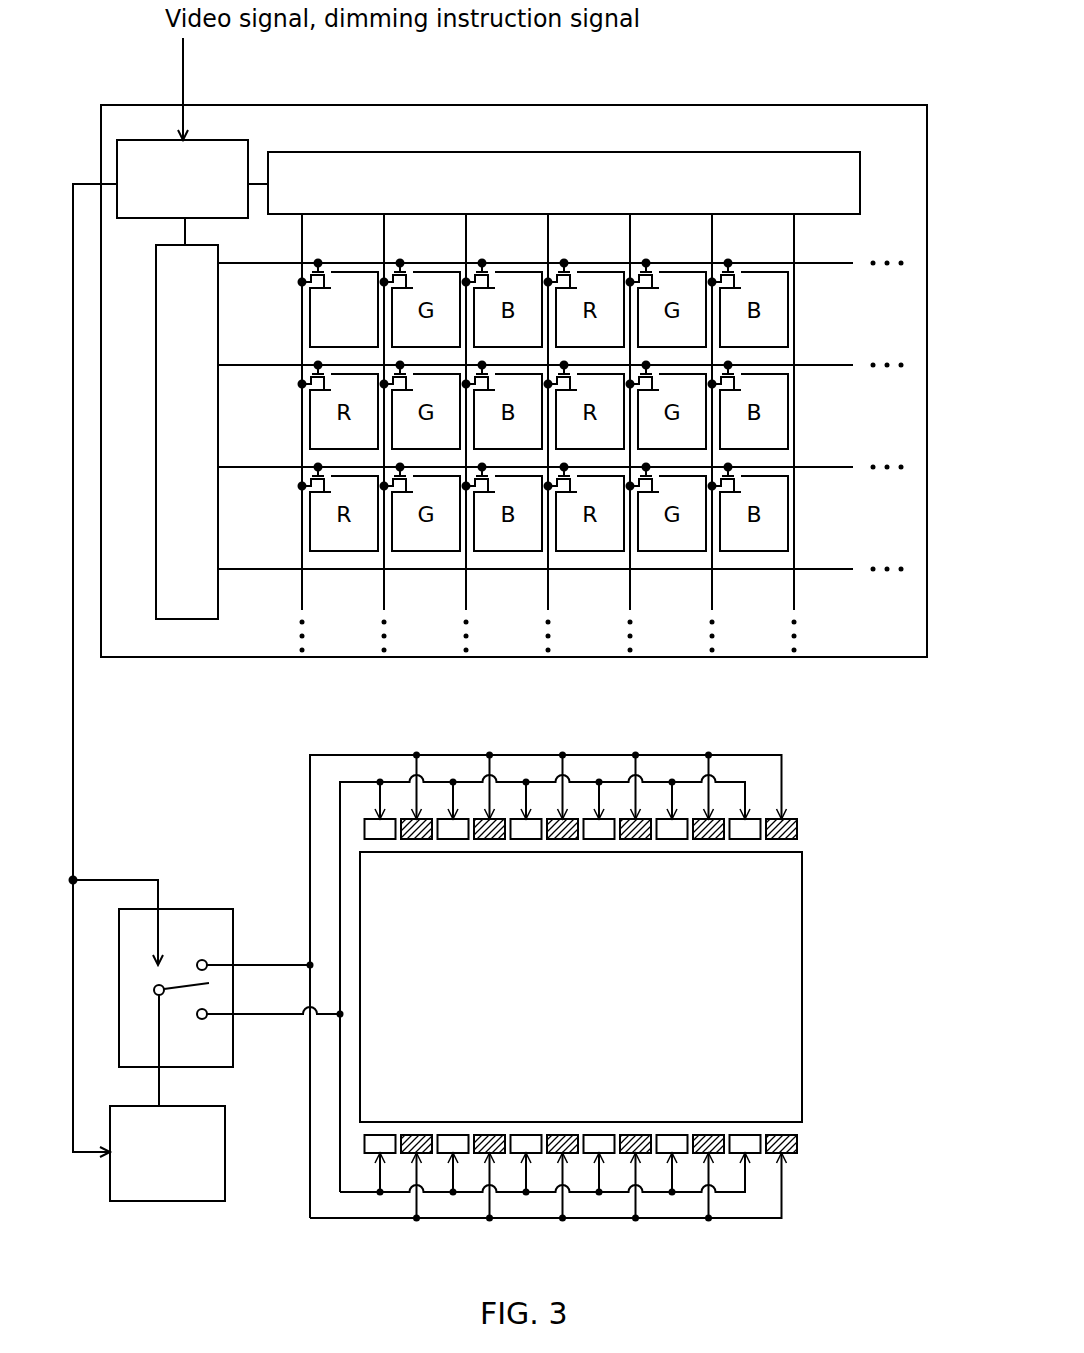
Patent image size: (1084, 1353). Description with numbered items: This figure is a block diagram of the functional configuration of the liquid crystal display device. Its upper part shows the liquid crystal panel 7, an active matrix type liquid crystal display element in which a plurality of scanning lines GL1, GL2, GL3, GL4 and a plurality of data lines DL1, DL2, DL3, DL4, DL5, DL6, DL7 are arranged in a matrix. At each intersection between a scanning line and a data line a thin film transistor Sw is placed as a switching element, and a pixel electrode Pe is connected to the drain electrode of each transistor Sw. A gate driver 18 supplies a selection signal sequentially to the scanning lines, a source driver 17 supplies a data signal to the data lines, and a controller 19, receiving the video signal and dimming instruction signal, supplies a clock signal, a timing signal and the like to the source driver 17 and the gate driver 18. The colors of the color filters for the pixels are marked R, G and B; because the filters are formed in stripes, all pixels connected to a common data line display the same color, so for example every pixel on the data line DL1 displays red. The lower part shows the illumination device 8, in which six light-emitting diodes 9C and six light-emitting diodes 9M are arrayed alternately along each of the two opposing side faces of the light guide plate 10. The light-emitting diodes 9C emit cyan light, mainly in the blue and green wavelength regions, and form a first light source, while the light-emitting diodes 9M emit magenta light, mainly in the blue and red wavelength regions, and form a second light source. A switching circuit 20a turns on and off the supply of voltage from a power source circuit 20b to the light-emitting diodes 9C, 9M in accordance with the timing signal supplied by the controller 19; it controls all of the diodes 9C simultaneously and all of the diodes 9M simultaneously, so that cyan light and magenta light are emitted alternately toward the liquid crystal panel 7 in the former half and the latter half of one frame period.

The liquid crystal panel 7 is at (868, 105).
The source driver 17 is at (748, 152).
The gate driver 18 is at (185, 619).
The controller 19 is at (235, 140).
The data line DL1 is at (302, 245).
The data line DL2 is at (384, 245).
The data line DL3 is at (466, 245).
The data line DL4 is at (548, 245).
The data line DL5 is at (630, 245).
The data line DL6 is at (712, 245).
The data line DL7 is at (794, 245).
The scanning line GL1 is at (811, 263).
The scanning line GL2 is at (811, 365).
The scanning line GL3 is at (811, 467).
The scanning line GL4 is at (811, 569).
The thin film transistor Sw is at (328, 272).
The pixel electrode Pe is at (322, 327).
The illumination device 8 is at (813, 932).
The light-emitting diode 9C is at (380, 839).
The light-emitting diode 9M is at (417, 839).
The light guide plate 10 is at (787, 990).
The switching circuit 20a is at (185, 909).
The power source circuit 20b is at (140, 1201).